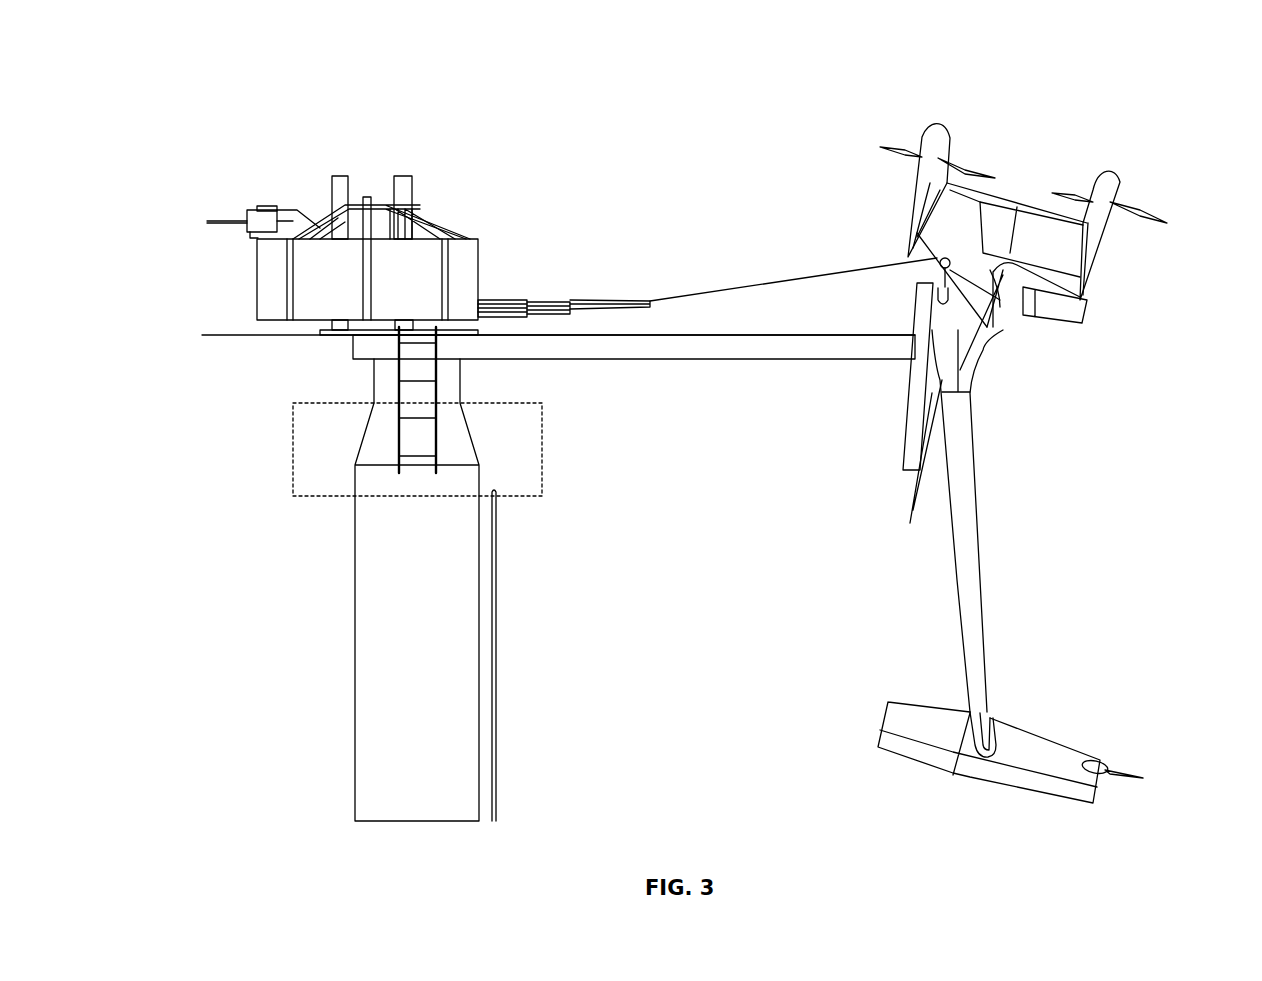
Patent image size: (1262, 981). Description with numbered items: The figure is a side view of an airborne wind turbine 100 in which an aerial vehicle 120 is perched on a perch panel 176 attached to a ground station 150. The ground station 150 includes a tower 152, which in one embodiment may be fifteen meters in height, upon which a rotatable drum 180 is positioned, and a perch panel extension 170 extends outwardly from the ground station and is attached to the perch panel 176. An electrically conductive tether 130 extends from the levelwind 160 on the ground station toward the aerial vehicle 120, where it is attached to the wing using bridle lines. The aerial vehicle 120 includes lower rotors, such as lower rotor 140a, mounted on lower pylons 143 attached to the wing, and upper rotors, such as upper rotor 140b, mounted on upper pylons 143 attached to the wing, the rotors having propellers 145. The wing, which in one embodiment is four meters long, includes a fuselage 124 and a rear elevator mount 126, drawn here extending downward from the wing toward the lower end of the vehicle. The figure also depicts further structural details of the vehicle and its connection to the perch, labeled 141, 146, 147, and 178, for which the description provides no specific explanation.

The airborne wind turbine 100 is at (697, 113).
The aerial vehicle 120 is at (1130, 110).
The fuselage 124 is at (975, 575).
The rear elevator mount 126 is at (1017, 752).
The electrically conductive tether 130 is at (763, 277).
The lower rotor 140a is at (934, 140).
The upper rotor 140b is at (1115, 190).
The fuselage pod 141 is at (1062, 255).
The pylon 143 is at (943, 232).
The propeller 145 is at (966, 168).
The strut 146 is at (1007, 330).
The brace 147 is at (915, 466).
The ground station 150 is at (292, 152).
The tower 152 is at (383, 697).
The levelwind 160 is at (592, 300).
The perch panel extension 170 is at (663, 348).
The perch panel 176 is at (910, 433).
The tether attachment hook 178 is at (940, 285).
The rotatable drum 180 is at (272, 288).